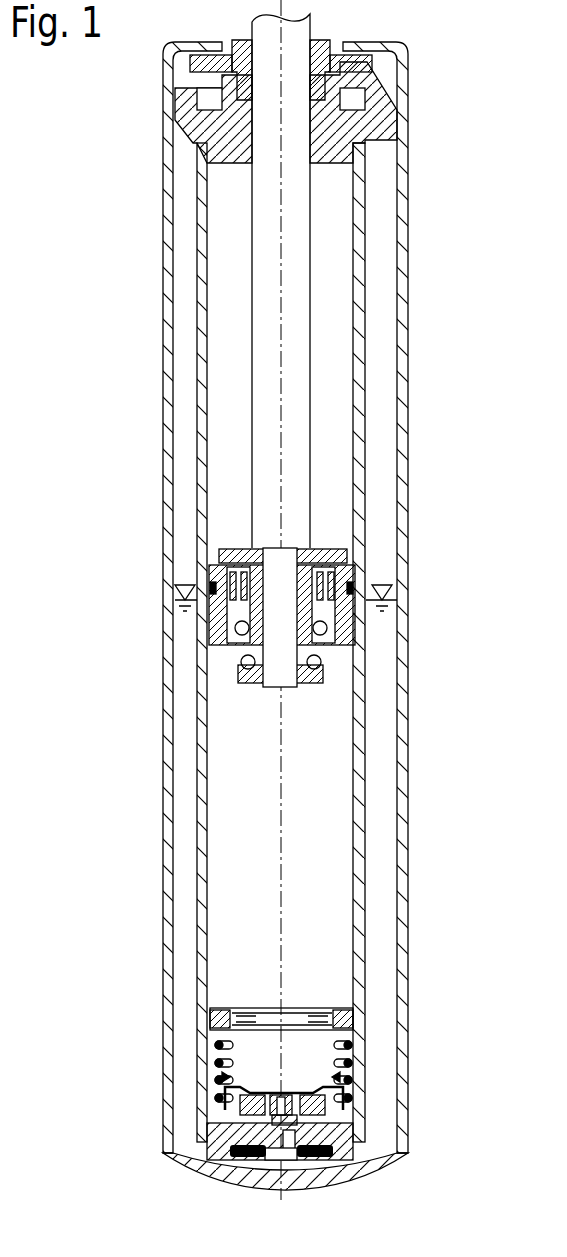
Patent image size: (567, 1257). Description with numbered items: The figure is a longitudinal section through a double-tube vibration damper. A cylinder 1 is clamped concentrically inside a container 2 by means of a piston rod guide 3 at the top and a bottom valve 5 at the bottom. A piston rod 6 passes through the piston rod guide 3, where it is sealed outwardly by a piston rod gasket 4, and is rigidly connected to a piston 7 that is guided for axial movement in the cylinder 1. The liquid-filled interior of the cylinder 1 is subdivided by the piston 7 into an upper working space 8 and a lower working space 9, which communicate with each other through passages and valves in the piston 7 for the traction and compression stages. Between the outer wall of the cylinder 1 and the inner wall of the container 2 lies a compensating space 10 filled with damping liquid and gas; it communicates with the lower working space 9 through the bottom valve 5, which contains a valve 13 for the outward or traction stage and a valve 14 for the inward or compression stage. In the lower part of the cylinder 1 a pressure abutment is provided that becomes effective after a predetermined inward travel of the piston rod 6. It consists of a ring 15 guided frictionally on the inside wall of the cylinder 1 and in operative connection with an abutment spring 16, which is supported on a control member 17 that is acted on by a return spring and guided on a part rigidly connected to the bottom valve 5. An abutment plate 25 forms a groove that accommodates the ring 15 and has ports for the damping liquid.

The cylinder 1 is at (358, 325).
The container 2 is at (402, 403).
The piston rod guide 3 is at (373, 122).
The piston rod gasket 4 is at (405, 73).
The bottom valve 5 is at (395, 1150).
The piston rod 6 is at (302, 233).
The piston 7 is at (353, 572).
The upper working space 8 is at (342, 268).
The lower working space 9 is at (343, 768).
The compensating space 10 is at (387, 681).
The valve 13 is at (226, 1077).
The valve 14 is at (220, 1158).
The ring 15 is at (352, 1032).
The abutment spring 16 is at (355, 1075).
The control member 17 is at (358, 1096).
The abutment plate 25 is at (345, 1007).